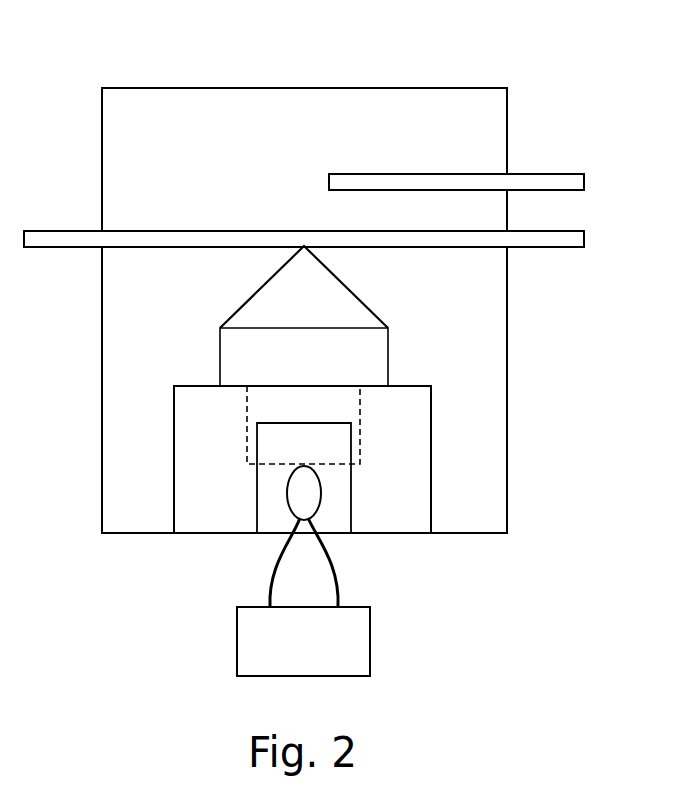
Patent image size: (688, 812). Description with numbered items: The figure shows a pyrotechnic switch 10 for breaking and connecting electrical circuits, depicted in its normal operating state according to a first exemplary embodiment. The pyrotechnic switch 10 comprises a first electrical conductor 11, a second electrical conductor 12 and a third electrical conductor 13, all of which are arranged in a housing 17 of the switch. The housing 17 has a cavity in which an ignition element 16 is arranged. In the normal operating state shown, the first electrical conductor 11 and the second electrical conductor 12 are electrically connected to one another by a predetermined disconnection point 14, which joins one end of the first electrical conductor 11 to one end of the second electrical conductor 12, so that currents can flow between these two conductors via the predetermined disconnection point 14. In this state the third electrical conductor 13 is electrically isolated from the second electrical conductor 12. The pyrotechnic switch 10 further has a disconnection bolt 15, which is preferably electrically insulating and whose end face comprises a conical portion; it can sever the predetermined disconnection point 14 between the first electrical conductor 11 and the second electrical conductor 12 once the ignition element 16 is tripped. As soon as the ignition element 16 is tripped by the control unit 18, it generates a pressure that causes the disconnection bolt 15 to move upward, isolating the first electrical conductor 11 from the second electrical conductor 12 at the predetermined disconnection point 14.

The pyrotechnic switch 10 is at (258, 66).
The first electrical conductor 11 is at (280, 230).
The second electrical conductor 12 is at (322, 243).
The third electrical conductor 13 is at (330, 173).
The predetermined disconnection point 14 is at (307, 247).
The disconnection bolt 15 is at (283, 290).
The ignition element 16 is at (304, 504).
The housing 17 is at (309, 110).
The control unit 18 is at (303, 641).